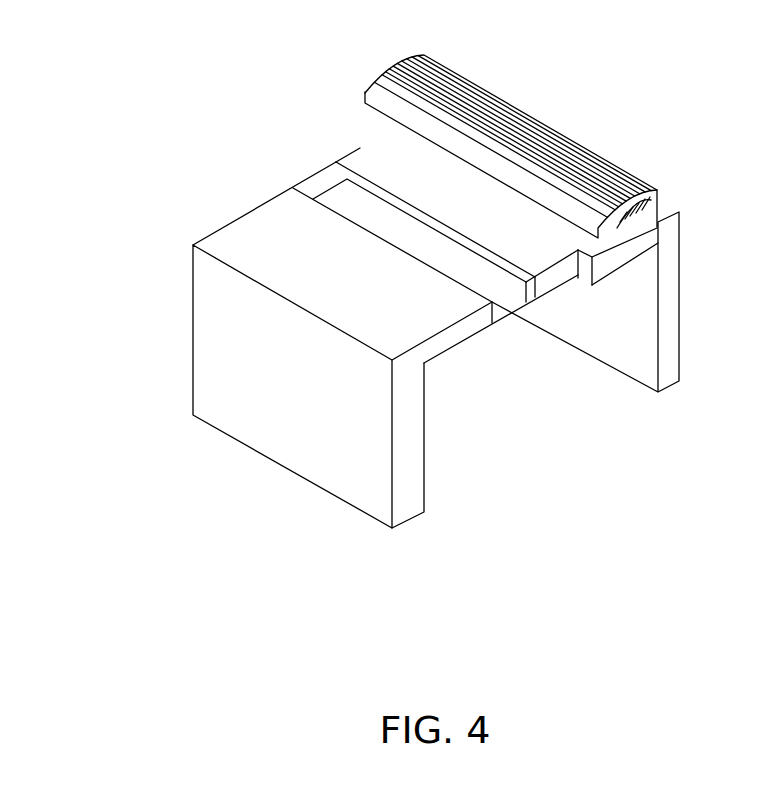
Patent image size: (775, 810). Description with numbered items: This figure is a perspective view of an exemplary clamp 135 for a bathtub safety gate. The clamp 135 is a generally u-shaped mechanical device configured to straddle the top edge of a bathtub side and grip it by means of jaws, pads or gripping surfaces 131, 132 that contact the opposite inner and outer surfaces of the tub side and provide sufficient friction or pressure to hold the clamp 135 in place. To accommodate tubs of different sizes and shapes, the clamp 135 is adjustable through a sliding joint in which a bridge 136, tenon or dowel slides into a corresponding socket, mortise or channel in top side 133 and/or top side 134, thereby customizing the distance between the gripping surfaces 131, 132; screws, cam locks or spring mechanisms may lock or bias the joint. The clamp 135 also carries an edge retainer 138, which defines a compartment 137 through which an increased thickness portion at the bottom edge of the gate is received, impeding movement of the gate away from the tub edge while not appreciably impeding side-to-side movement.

The gripping surface 131 is at (675, 300).
The gripping surface 132 is at (218, 388).
The top side 133 is at (375, 160).
The top side 134 is at (255, 242).
The clamp 135 is at (168, 270).
The bridge 136 is at (342, 202).
The compartment 137 is at (620, 231).
The edge retainer 138 is at (532, 118).